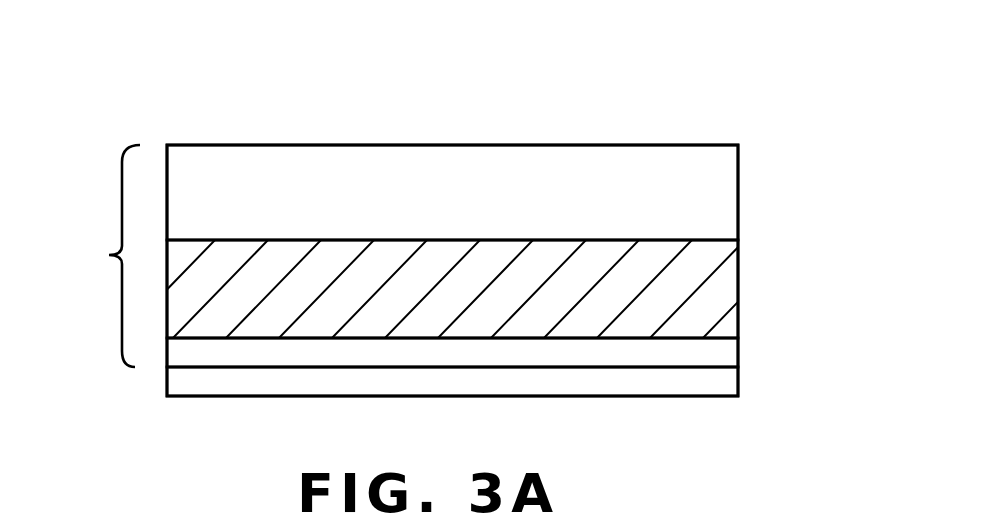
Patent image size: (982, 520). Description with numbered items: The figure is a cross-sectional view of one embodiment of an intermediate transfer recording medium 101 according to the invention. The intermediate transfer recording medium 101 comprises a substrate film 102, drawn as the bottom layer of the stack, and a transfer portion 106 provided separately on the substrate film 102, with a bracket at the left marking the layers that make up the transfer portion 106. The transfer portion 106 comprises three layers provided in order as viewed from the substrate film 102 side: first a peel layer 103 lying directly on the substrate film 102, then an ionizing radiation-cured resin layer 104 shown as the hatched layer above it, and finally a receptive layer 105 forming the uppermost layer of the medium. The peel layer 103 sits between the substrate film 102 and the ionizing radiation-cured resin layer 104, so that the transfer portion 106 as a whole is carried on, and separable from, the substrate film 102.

The intermediate transfer recording medium 101 is at (562, 137).
The substrate film 102 is at (728, 387).
The peel layer 103 is at (725, 355).
The ionizing radiation-cured resin layer 104 is at (725, 291).
The receptive layer 105 is at (728, 201).
The transfer portion 106 is at (87, 256).